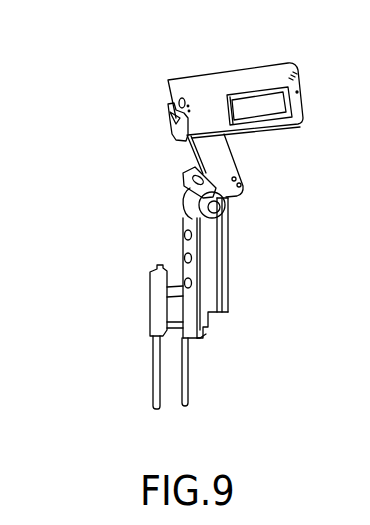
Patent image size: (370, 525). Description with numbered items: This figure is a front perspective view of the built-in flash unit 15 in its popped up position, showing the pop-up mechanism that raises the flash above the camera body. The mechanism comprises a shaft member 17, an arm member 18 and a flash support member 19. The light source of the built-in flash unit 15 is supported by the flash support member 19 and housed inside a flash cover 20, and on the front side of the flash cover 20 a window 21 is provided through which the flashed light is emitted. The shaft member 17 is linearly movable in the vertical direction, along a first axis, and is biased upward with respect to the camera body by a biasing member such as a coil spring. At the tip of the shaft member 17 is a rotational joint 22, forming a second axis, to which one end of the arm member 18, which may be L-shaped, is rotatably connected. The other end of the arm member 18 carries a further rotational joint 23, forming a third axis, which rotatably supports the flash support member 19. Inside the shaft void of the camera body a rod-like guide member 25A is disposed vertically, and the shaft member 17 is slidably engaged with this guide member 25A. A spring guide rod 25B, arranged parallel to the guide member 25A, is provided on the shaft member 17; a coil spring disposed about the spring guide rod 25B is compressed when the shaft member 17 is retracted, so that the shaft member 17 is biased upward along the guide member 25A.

The built-in flash unit 15 is at (96, 231).
The shaft member 17 is at (228, 287).
The arm member 18 is at (246, 172).
The flash support member 19 is at (258, 132).
The flash cover 20 is at (270, 73).
The window 21 is at (250, 107).
The rotational joint 22 is at (192, 207).
The rotational joint 23 is at (170, 128).
The guide member 25A is at (150, 377).
The spring guide rod 25B is at (190, 378).